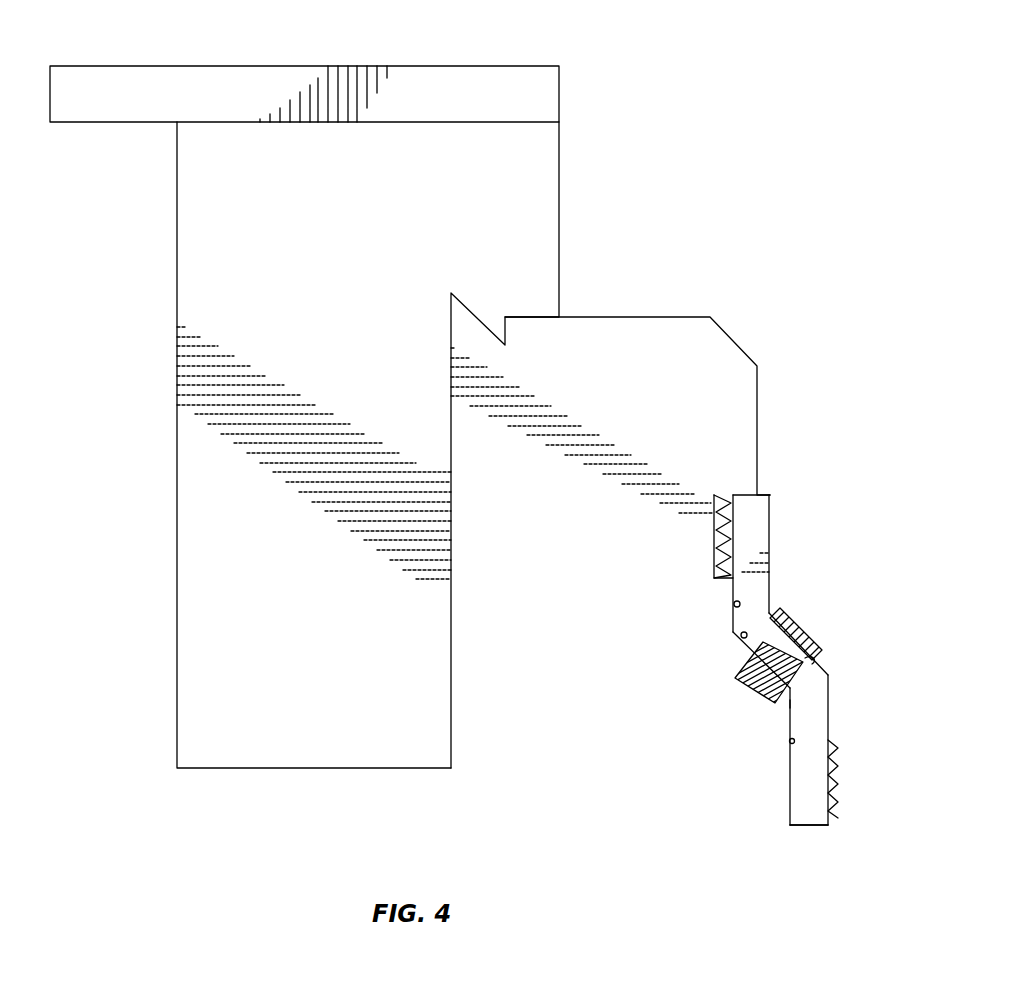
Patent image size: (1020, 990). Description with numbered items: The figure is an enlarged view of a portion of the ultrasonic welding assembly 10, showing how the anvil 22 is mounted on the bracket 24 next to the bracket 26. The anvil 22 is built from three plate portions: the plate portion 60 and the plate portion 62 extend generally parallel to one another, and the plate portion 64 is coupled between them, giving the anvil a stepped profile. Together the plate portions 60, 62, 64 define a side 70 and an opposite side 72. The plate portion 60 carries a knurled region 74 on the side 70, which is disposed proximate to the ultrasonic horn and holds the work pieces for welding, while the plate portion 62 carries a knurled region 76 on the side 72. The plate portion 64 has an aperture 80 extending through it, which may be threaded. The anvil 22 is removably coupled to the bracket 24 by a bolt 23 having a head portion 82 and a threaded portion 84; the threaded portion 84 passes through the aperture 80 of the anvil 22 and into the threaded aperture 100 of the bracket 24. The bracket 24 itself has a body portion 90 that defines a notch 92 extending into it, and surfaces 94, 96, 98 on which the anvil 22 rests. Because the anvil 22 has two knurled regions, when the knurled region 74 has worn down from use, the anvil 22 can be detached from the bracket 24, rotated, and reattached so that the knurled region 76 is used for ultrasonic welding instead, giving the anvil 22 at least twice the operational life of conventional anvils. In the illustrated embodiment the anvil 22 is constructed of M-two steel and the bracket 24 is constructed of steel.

The ultrasonic welding assembly 10 is at (818, 116).
The anvil 22 is at (808, 827).
The bolt 23 is at (800, 622).
The bracket 24 is at (587, 742).
The bracket 26 is at (353, 740).
The plate portion 60 is at (790, 779).
The plate portion 62 is at (740, 587).
The plate portion 64 is at (741, 636).
The side 70 is at (831, 700).
The side 72 is at (789, 704).
The knurled region 74 is at (840, 817).
The knurled region 76 is at (726, 575).
The aperture 80 is at (800, 664).
The head portion 82 is at (780, 617).
The threaded portion 84 is at (783, 664).
The body portion 90 is at (640, 325).
The notch 92 is at (716, 495).
The surface 94 is at (734, 606).
The surface 96 is at (742, 640).
The surface 98 is at (790, 741).
The threaded aperture 100 is at (736, 683).